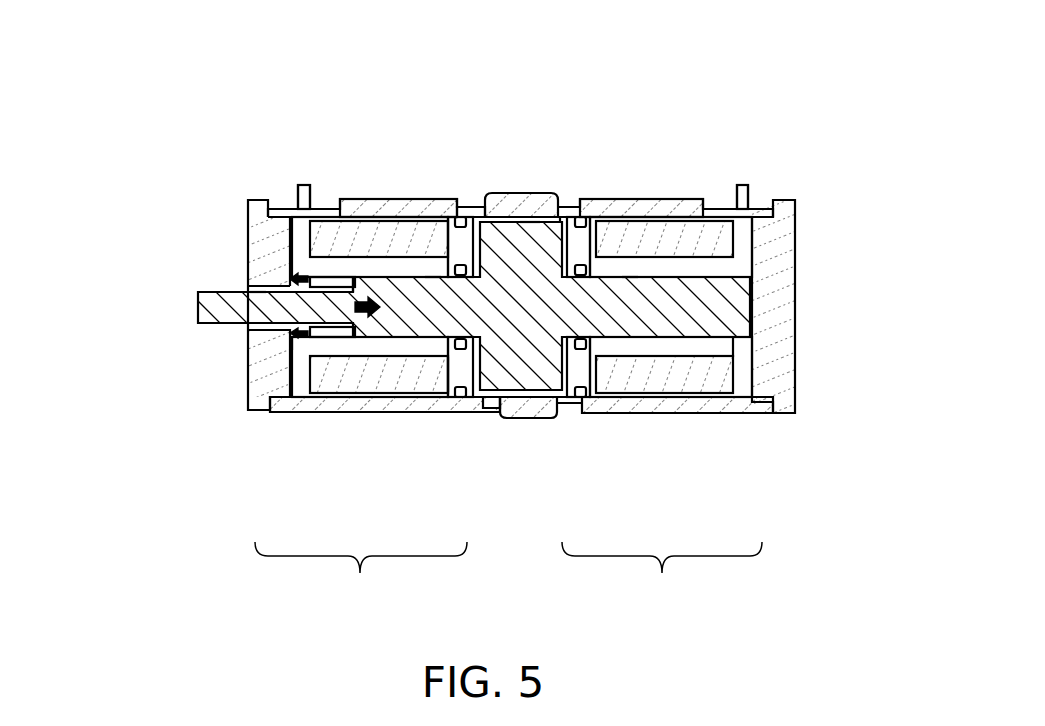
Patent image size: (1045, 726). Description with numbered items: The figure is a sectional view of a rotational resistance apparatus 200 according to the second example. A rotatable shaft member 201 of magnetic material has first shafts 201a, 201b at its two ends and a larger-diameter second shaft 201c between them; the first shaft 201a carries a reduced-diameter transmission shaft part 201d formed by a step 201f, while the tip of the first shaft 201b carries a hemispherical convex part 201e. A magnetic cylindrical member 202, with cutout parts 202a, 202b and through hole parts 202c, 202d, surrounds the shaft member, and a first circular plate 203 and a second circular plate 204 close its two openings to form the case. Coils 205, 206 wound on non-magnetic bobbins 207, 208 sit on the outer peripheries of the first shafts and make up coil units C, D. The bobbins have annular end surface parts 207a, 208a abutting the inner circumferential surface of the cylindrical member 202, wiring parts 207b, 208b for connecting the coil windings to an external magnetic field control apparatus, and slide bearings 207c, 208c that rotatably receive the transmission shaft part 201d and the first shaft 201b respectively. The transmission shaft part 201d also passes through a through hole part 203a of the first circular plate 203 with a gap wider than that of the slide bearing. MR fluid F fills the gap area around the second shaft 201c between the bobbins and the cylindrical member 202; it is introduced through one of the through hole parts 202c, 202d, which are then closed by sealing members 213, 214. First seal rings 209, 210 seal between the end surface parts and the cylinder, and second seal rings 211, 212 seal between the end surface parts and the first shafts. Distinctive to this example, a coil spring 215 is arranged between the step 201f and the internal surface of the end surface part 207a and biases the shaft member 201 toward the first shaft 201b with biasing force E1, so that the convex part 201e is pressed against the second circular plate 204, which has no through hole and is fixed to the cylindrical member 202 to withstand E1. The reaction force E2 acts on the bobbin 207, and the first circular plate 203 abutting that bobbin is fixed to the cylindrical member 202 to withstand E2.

The rotational resistance apparatus 200 is at (205, 373).
The shaft member 201 is at (207, 287).
The first shaft 201a is at (433, 277).
The first shaft 201b is at (630, 277).
The second shaft 201c is at (530, 215).
The transmission shaft part 201d is at (257, 287).
The hemispherical convex part 201e is at (755, 297).
The step 201f is at (350, 292).
The cylindrical member 202 is at (396, 200).
The cutout part 202a is at (339, 198).
The cutout part 202b is at (703, 206).
The through hole part 202c is at (502, 213).
The through hole part 202d is at (498, 408).
The first circular plate 203 is at (253, 200).
The through hole part 203a is at (268, 287).
The second circular plate 204 is at (778, 198).
The coil 205 is at (350, 380).
The coil 206 is at (678, 370).
The bobbin 207 is at (386, 347).
The end surface part 207a is at (447, 372).
The wiring part 207b is at (301, 186).
The slide bearing 207c is at (297, 338).
The bobbin 208 is at (665, 350).
The end surface part 208a is at (600, 372).
The wiring part 208b is at (742, 186).
The slide bearing 208c is at (738, 340).
The first seal ring 209 is at (458, 397).
The first seal ring 210 is at (574, 347).
The second seal ring 211 is at (465, 397).
The second seal ring 212 is at (571, 395).
The sealing member 213 is at (493, 192).
The sealing member 214 is at (520, 418).
The coil spring 215 is at (326, 328).
The coil unit C is at (361, 575).
The coil unit D is at (662, 575).
The biasing force E1 is at (383, 307).
The reaction force E2 is at (303, 305).
The MR fluid F is at (565, 218).